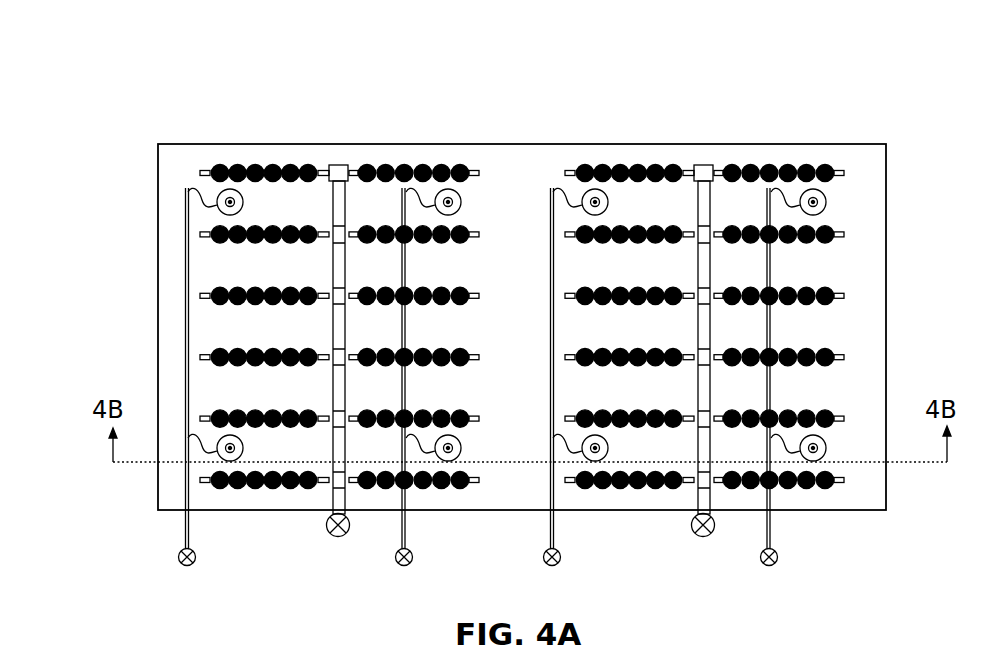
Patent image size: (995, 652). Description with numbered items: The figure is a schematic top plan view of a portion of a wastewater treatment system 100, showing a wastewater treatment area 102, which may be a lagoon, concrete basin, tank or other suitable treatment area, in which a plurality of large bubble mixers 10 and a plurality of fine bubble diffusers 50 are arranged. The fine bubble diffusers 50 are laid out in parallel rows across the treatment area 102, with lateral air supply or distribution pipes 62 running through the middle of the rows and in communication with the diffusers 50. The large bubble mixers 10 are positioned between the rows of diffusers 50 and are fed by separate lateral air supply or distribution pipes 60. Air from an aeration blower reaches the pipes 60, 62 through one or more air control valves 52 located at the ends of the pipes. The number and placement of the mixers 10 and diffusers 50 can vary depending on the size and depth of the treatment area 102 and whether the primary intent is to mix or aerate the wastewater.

The wastewater treatment system 100 is at (110, 73).
The wastewater treatment area 102 is at (867, 267).
The fine bubble diffuser 50 is at (293, 164).
The large bubble mixer 10 is at (244, 201).
The lateral air supply pipe 60 is at (185, 333).
The lateral air supply pipe 62 is at (346, 329).
The air control valve 52 is at (178, 557).